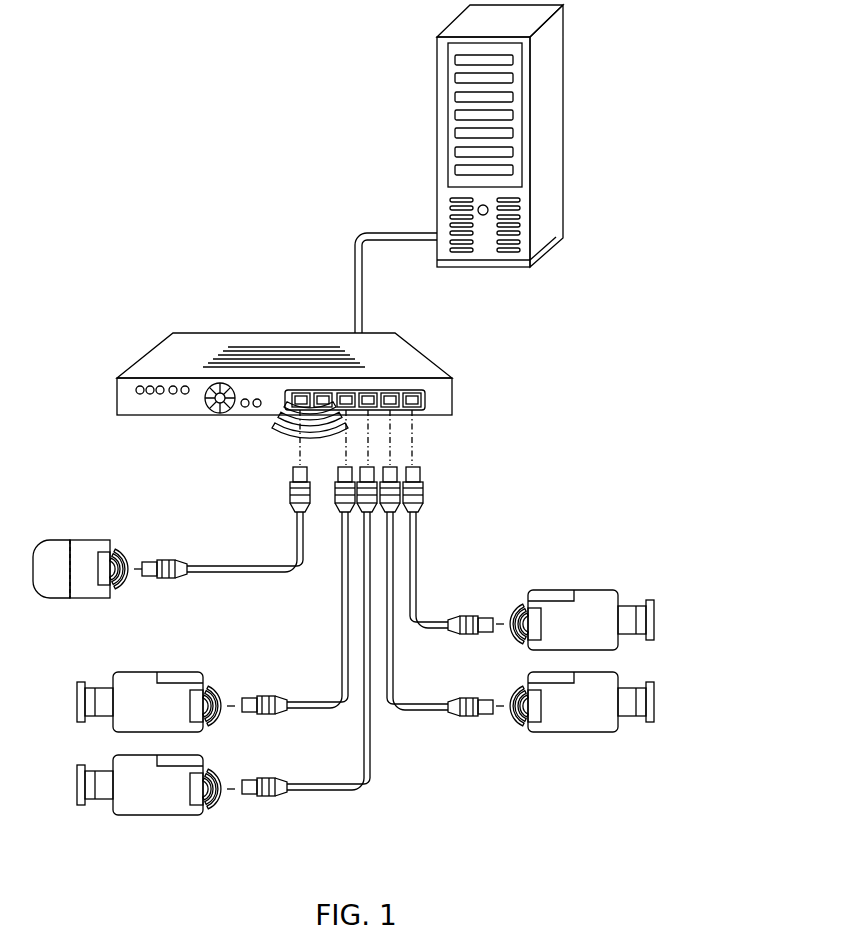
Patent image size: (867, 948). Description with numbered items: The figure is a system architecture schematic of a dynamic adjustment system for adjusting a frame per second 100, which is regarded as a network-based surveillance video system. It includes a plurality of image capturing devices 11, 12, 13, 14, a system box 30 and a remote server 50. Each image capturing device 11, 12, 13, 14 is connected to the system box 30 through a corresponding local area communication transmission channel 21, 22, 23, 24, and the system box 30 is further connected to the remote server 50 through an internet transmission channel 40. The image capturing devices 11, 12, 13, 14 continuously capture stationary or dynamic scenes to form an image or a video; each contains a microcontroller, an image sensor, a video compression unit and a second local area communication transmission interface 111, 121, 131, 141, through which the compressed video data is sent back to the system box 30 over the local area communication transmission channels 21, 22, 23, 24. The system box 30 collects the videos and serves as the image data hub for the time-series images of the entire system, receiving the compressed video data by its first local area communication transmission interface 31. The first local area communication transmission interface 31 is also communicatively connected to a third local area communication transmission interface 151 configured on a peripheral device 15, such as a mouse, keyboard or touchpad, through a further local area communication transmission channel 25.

The dynamic adjustment system for adjusting a frame per second 100 is at (202, 189).
The remote server 50 is at (437, 104).
The internet transmission channel 40 is at (353, 283).
The system box 30 is at (200, 332).
The first local area communication transmission interface 31 is at (425, 398).
The image capturing device 11 is at (156, 682).
The image capturing device 12 is at (156, 805).
The image capturing device 13 is at (575, 600).
The image capturing device 14 is at (575, 726).
The peripheral device 15 is at (87, 586).
The second local area communication transmission interface 111 is at (198, 690).
The second local area communication transmission interface 121 is at (200, 806).
The second local area communication transmission interface 131 is at (535, 610).
The second local area communication transmission interface 141 is at (535, 725).
The third local area communication transmission interface 151 is at (104, 586).
The local area communication transmission channel 21 is at (222, 688).
The local area communication transmission channel 22 is at (222, 770).
The local area communication transmission channel 23 is at (422, 615).
The local area communication transmission channel 24 is at (403, 690).
The local area communication transmission channel 25 is at (127, 552).